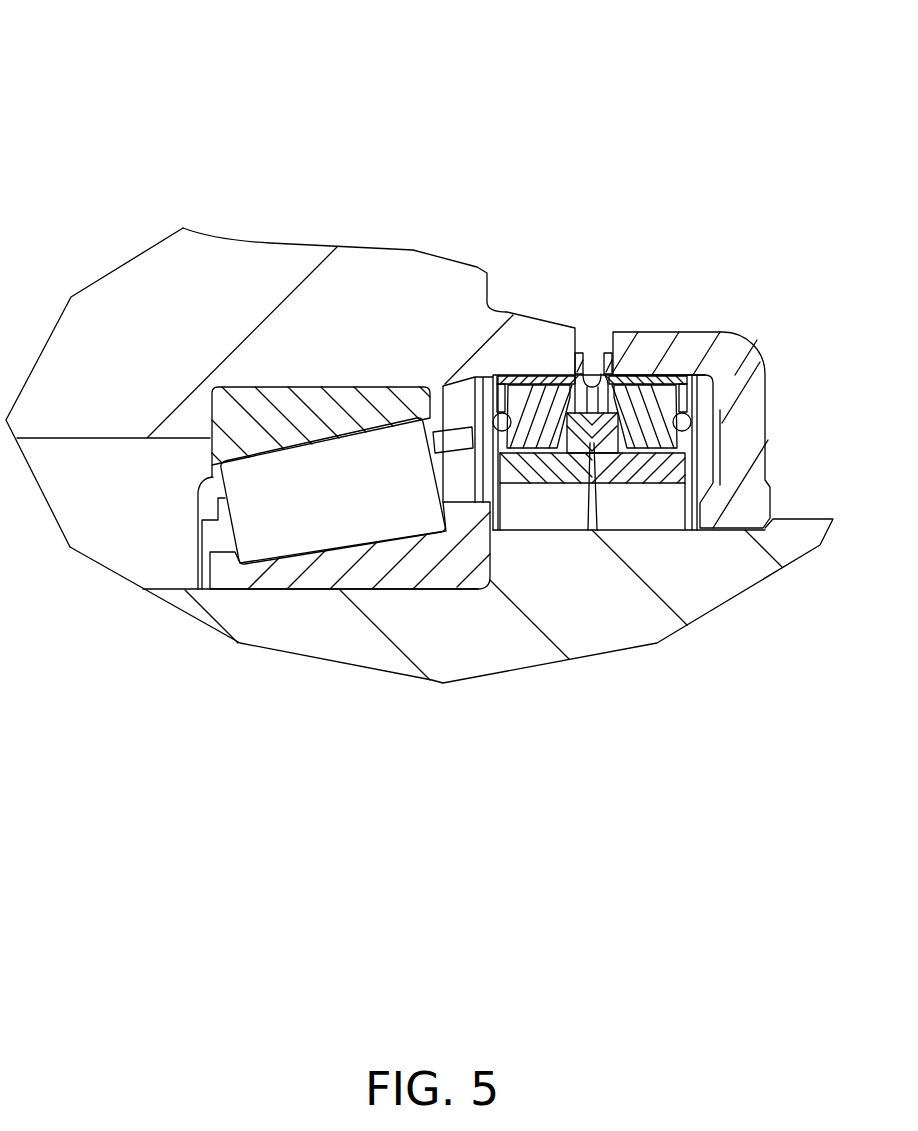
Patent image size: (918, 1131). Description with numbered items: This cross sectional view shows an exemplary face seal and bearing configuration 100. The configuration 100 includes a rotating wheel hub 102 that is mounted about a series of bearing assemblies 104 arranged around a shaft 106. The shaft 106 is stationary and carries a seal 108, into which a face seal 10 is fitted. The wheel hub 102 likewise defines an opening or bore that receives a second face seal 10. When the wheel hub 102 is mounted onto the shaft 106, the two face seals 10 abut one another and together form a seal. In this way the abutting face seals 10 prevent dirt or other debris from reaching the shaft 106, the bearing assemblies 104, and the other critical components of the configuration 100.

The face seal and bearing configuration 100 is at (207, 83).
The rotating wheel hub 102 is at (167, 263).
The bearing assemblies 104 is at (290, 537).
The shaft 106 is at (600, 633).
The seal 108 is at (687, 343).
The face seal 10 is at (592, 380).